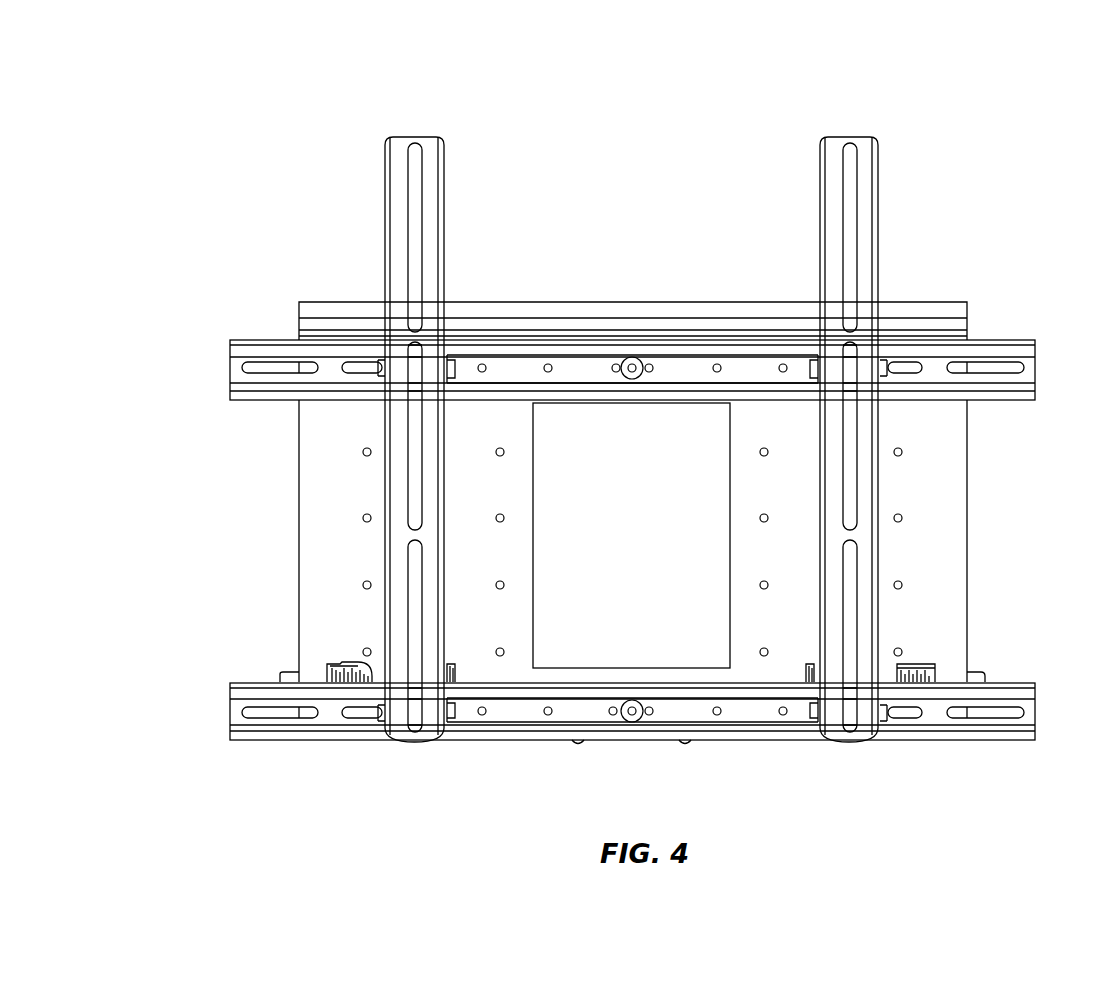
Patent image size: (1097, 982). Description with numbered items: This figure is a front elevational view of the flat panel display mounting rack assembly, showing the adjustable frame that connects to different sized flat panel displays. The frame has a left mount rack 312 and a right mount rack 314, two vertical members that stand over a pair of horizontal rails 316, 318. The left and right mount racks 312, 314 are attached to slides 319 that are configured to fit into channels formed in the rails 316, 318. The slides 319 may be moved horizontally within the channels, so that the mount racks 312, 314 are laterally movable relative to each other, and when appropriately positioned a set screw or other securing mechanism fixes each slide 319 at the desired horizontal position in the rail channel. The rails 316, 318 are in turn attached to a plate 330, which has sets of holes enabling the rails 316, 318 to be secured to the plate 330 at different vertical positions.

The left mount rack 312 is at (427, 135).
The right mount rack 314 is at (862, 135).
The rail 316 is at (666, 340).
The rail 318 is at (663, 730).
The slides 319 is at (262, 338).
The plate 330 is at (948, 492).